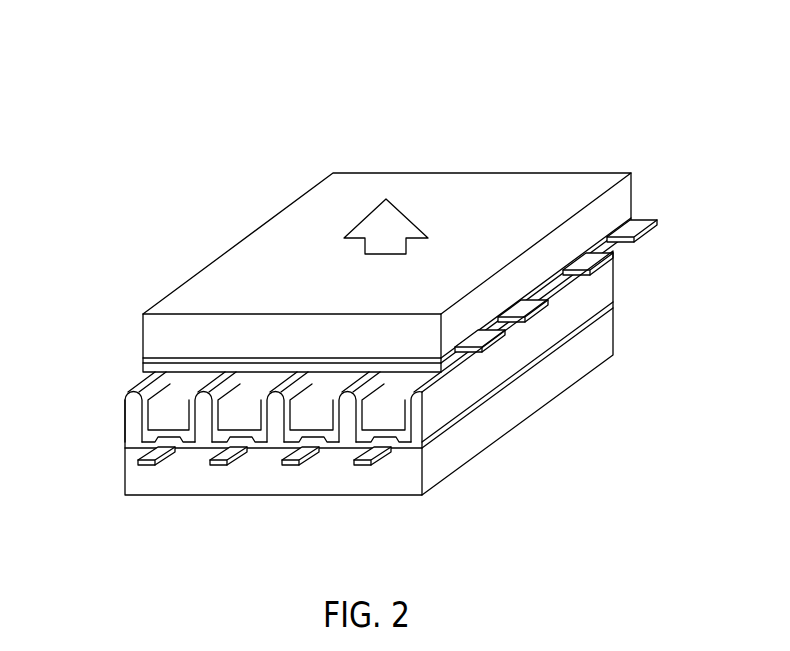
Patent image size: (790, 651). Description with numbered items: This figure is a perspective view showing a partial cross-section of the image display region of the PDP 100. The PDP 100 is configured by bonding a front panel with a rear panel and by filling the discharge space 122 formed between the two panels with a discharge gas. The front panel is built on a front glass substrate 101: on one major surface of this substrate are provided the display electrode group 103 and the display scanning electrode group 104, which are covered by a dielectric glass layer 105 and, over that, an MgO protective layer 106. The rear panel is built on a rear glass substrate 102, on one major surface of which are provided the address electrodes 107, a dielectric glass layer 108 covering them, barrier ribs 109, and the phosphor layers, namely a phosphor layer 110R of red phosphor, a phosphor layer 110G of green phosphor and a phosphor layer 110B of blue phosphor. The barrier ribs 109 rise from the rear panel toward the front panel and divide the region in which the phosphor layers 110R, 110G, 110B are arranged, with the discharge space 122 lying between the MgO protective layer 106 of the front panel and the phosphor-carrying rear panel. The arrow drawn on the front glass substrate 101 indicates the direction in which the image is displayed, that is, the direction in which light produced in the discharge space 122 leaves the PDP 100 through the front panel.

The PDP 100 is at (302, 120).
The front glass substrate 101 is at (143, 326).
The rear glass substrate 102 is at (390, 490).
The display electrode group 103 is at (477, 330).
The display scanning electrode group 104 is at (632, 231).
The dielectric glass layer 105 is at (143, 362).
The MgO protective layer 106 is at (150, 381).
The address electrodes 107 is at (212, 466).
The dielectric glass layer 108 is at (136, 444).
The barrier ribs 109 is at (272, 416).
The phosphor layer (red phosphor) 110R is at (140, 462).
The phosphor layer (green phosphor) 110G is at (250, 458).
The phosphor layer (blue phosphor) 110B is at (282, 458).
The discharge space 122 is at (387, 393).